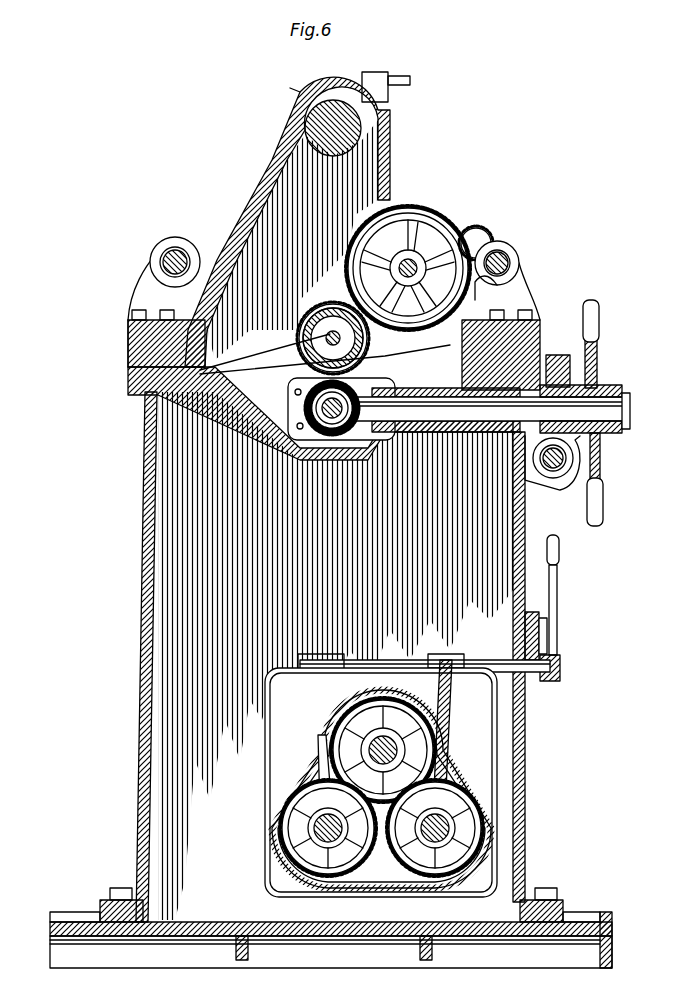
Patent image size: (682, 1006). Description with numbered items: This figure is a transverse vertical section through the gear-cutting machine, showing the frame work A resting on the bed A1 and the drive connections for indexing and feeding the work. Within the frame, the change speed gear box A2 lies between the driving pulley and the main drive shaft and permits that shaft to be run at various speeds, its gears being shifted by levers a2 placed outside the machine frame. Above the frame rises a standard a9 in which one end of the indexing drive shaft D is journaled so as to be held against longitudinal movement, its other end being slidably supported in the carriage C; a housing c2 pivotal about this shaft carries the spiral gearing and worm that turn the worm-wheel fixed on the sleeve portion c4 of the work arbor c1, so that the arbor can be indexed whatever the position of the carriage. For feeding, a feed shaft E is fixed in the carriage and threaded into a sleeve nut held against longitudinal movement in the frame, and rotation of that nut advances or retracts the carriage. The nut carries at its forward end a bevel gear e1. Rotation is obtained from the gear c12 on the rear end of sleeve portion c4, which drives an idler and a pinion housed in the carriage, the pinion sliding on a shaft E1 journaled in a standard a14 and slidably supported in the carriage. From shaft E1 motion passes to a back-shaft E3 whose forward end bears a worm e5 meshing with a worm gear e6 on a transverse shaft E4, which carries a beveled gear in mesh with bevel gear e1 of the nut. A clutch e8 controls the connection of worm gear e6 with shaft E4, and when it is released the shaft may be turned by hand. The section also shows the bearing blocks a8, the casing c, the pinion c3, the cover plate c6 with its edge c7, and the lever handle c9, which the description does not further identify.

The frame work A is at (145, 570).
The bed A1 is at (92, 916).
The change speed gear box A2 is at (495, 780).
The levers a2 is at (558, 592).
The bearing blocks a8 is at (205, 342).
The standard a9 is at (140, 290).
The standard a14 is at (524, 300).
The casing c is at (282, 167).
The work arbor c1 is at (300, 124).
The carriage C is at (380, 268).
The housing c2 is at (436, 208).
The pinion c3 is at (490, 240).
The sleeve portion c4 is at (318, 352).
The cover plate c6 is at (325, 359).
The cover plate edge c7 is at (297, 353).
The lever handle c9 is at (600, 350).
The gear c12 is at (310, 345).
The indexing drive shaft D is at (172, 256).
The feed shaft E is at (310, 412).
The shaft E1 is at (514, 256).
The bevel gear e1 is at (302, 408).
The back-shaft E3 is at (585, 450).
The transverse shaft E4 is at (440, 414).
The worm e5 is at (553, 480).
The worm gear e6 is at (562, 372).
The clutch e8 is at (588, 386).